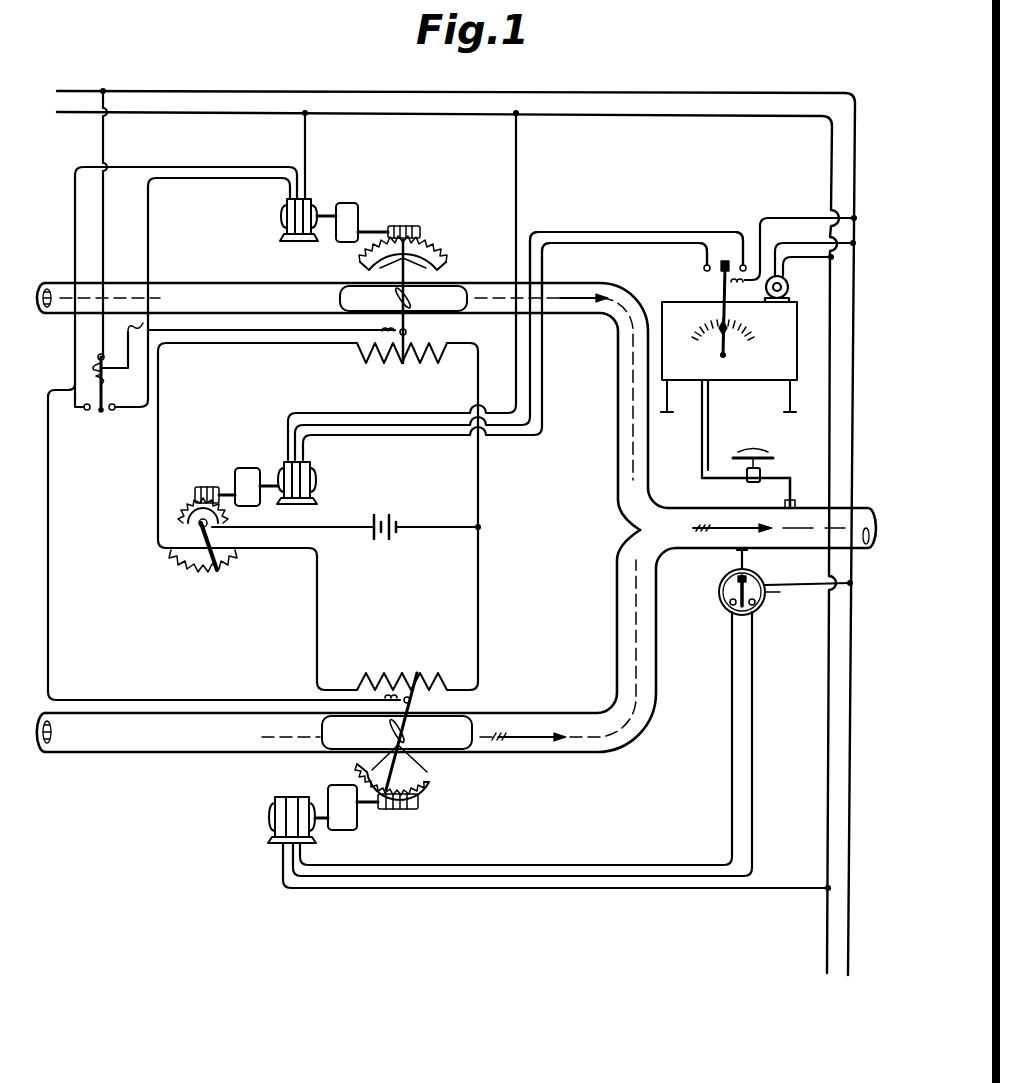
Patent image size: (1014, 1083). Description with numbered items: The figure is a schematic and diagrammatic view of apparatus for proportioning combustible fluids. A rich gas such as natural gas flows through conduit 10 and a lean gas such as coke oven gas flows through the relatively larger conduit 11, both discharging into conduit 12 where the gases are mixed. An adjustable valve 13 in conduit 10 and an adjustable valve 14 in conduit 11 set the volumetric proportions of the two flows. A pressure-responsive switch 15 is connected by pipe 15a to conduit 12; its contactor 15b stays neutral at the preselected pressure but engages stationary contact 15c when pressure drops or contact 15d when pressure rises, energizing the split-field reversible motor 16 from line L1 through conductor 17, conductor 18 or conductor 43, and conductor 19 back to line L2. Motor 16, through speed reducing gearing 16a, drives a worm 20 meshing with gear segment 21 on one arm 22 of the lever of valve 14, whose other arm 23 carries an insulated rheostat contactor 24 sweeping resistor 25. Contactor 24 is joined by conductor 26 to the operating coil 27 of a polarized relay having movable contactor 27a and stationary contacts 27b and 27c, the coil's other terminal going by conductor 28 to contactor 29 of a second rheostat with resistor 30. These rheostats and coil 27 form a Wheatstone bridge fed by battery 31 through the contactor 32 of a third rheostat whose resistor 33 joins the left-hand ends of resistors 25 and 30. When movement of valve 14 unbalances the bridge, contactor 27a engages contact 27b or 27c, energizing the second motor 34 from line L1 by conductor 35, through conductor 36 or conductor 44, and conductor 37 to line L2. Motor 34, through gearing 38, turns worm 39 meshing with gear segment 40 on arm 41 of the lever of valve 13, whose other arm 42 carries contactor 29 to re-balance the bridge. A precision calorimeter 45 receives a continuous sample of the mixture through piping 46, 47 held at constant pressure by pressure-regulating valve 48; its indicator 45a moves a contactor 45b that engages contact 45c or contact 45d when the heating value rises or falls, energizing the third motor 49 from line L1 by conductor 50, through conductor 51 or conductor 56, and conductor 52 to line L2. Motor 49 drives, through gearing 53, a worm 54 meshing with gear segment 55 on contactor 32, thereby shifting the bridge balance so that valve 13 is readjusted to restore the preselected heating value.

The conduit 10 is at (222, 283).
The conduit 11 is at (168, 755).
The conduit 12 is at (712, 508).
The adjustable valve 13 is at (394, 299).
The adjustable valve 14 is at (390, 730).
The pressure-responsive switch 15 is at (718, 600).
The pipe 15a is at (738, 560).
The contactor 15b is at (765, 600).
The stationary contact 15c is at (755, 607).
The contact 15d is at (731, 607).
The motor 16 is at (272, 805).
The speed reducing gearing 16a is at (357, 826).
The conductor 17 is at (780, 582).
The conductor 18 is at (755, 772).
The conductor 19 is at (770, 890).
The worm 20 is at (412, 812).
The gear segment 21 is at (432, 786).
The arm 22 is at (413, 780).
The arm 23 is at (415, 701).
The rheostat contactor 24 is at (420, 675).
The resistor 25 is at (362, 672).
The conductor 26 is at (176, 700).
The operating coil 27 is at (98, 364).
The movable contactor 27a is at (105, 374).
The stationary contact 27b is at (114, 411).
The stationary contact 27c is at (87, 411).
The conductor 28 is at (124, 333).
The contactor 29 is at (382, 360).
The resistor 30 is at (426, 358).
The battery 31 is at (386, 512).
The contactor 32 is at (220, 550).
The resistor 33 is at (230, 568).
The motor 34 is at (283, 232).
The conductor 35 is at (105, 236).
The conductor 36 is at (150, 236).
The conductor 37 is at (306, 150).
The speed reducing gearing 38 is at (347, 203).
The worm 39 is at (403, 224).
The gear segment 40 is at (447, 256).
The arm 41 is at (440, 268).
The arm 42 is at (410, 333).
The conductor 43 is at (732, 772).
The conductor 44 is at (73, 250).
The calorimeter 45 is at (729, 357).
The indicator 45a is at (733, 345).
The contactor 45b is at (728, 281).
The stationary contact 45c is at (742, 264).
The contact 45d is at (704, 268).
The piping 46 is at (792, 490).
The piping 47 is at (702, 442).
The pressure-regulating valve 48 is at (768, 456).
The motor 49 is at (318, 474).
The conductor 50 is at (797, 218).
The conductor 51 is at (655, 232).
The conductor 52 is at (340, 413).
The speed reducing gearing 53 is at (252, 468).
The worm 54 is at (207, 487).
The gear segment 55 is at (185, 510).
The conductor 56 is at (588, 244).
The line L1 is at (447, 535).
The line L2 is at (435, 560).